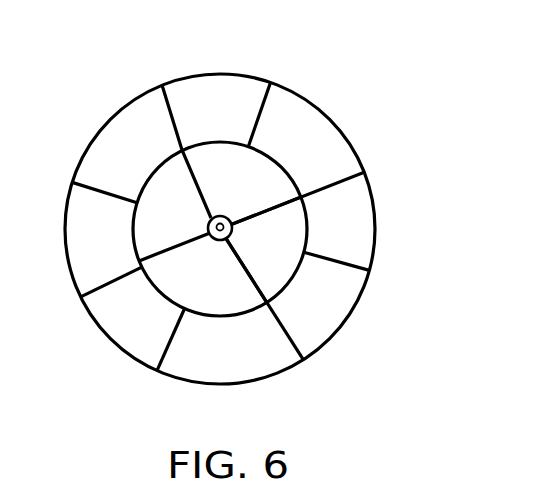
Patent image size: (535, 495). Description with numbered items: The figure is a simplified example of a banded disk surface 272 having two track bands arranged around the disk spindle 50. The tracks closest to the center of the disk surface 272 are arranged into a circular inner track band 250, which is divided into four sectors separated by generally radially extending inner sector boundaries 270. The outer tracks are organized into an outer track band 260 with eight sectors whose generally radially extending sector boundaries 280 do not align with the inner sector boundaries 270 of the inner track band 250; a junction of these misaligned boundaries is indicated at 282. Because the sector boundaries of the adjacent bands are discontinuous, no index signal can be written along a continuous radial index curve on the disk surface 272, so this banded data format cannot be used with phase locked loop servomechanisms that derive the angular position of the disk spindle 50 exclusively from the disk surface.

The disk spindle 50 is at (220, 240).
The inner track band 250 is at (292, 258).
The outer track band 260 is at (343, 151).
The inner sector boundaries 270 is at (193, 178).
The banded disk surface 272 is at (194, 88).
The sector boundaries 280 is at (268, 88).
The radial spoke 282 is at (182, 150).